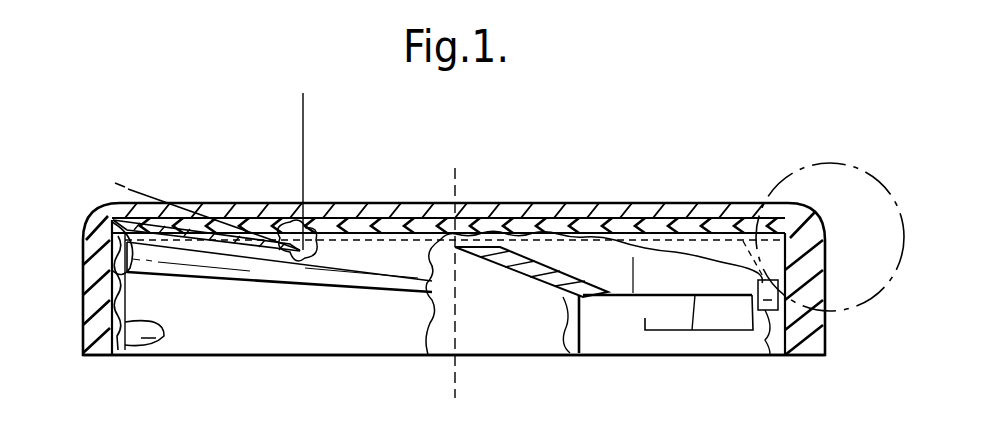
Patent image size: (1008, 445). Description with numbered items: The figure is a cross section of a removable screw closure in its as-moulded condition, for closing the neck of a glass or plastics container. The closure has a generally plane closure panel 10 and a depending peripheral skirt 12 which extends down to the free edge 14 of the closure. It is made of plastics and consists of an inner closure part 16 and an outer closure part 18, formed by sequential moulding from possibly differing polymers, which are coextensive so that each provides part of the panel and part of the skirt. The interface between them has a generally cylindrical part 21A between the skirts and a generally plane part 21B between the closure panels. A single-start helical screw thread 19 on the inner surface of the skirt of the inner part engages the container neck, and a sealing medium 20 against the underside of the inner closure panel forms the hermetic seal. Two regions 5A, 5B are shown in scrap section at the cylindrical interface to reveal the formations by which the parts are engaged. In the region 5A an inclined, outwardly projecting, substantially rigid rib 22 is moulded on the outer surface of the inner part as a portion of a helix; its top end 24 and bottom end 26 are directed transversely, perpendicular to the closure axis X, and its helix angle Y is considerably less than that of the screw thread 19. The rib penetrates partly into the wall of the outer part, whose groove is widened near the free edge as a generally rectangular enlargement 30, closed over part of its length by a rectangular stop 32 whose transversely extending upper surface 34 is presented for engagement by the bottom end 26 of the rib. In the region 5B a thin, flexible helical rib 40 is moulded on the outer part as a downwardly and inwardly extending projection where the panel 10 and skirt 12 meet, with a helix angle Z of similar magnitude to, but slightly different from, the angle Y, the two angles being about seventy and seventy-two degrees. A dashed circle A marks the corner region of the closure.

The closure panel 10 is at (402, 202).
The peripheral skirt 12 is at (80, 301).
The free edge 14 is at (206, 358).
The inner closure part 16 is at (646, 236).
The outer closure part 18 is at (572, 227).
The screw thread 19 is at (345, 291).
The sealing medium 20 is at (700, 240).
The cylindrical interface part 21A is at (118, 243).
The plane interface part 21B is at (116, 216).
The inclined rib 22 is at (503, 262).
The top end of rib 24 is at (495, 246).
The bottom end of rib 26 is at (605, 298).
The enlargement 30 is at (579, 323).
The stop 32 is at (707, 337).
The upper surface of stop 34 is at (695, 295).
The flexible rib 40 is at (238, 246).
The sectioned region 5A is at (427, 326).
The sectioned region 5B is at (261, 262).
The detail circle A is at (873, 298).
The closure axis X is at (455, 283).
The helix angle of inclined rib Y is at (630, 257).
The helix angle of flexible rib Z is at (300, 124).